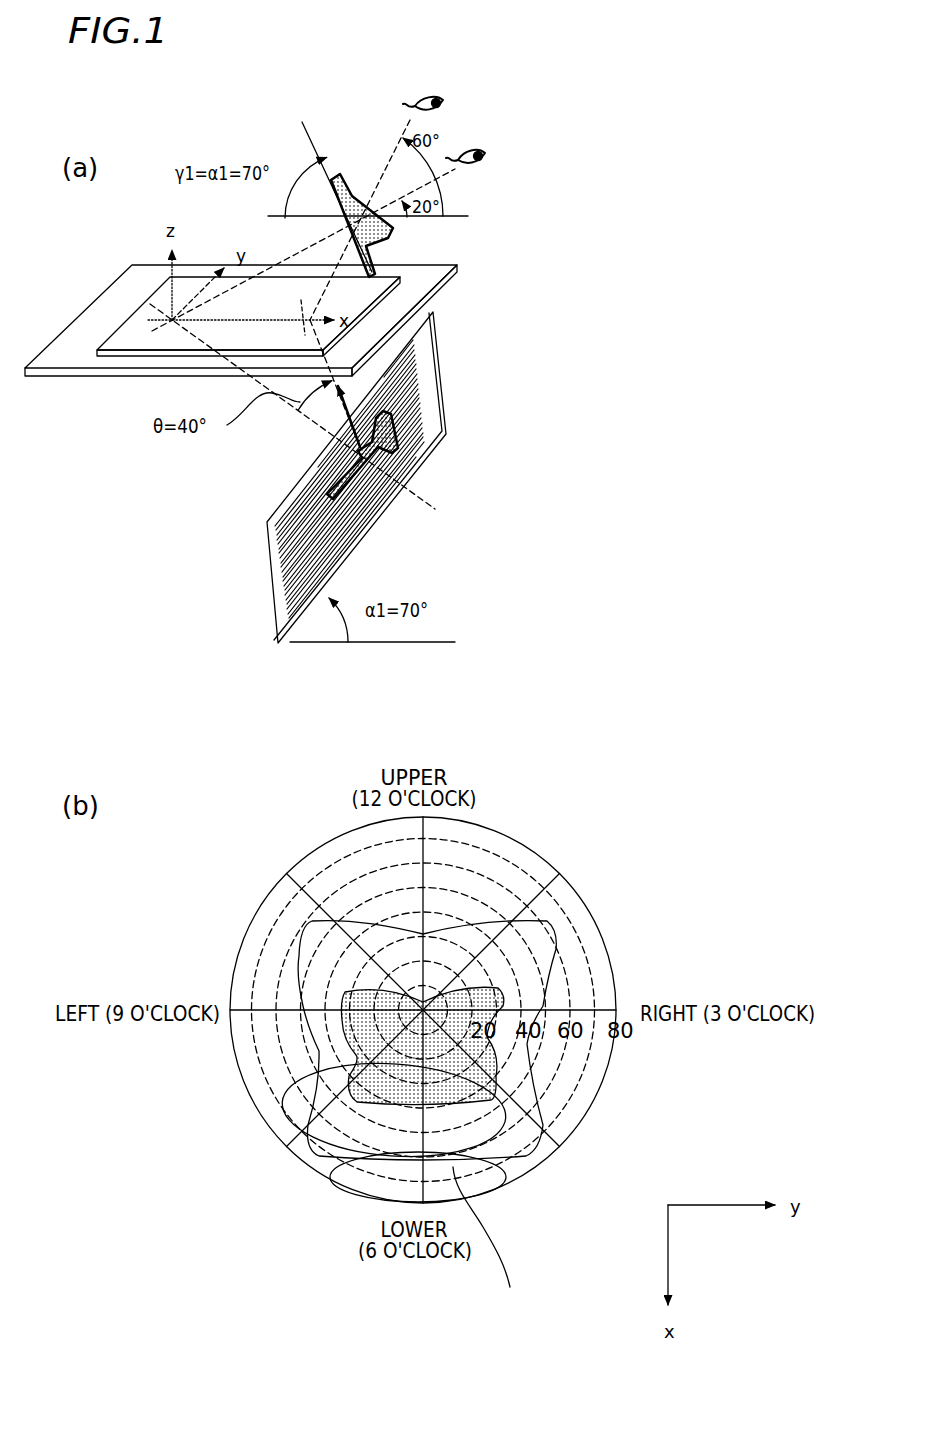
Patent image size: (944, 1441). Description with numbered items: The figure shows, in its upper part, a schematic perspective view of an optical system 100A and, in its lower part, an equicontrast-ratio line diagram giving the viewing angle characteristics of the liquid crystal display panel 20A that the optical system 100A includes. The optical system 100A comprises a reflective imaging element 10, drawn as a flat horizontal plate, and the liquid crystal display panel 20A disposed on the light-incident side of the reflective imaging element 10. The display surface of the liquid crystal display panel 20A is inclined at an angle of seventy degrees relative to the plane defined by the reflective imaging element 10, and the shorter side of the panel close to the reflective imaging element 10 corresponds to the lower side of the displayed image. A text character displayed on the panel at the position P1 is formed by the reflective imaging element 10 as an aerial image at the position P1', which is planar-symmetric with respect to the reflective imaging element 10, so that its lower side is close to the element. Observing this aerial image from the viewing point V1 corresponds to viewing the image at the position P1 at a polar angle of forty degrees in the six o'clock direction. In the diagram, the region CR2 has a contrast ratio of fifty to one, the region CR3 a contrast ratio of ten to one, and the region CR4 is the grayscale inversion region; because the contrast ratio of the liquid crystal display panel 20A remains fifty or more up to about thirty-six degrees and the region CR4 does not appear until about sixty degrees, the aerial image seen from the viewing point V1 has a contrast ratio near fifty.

The optical system 100A is at (325, 363).
The reflective imaging element 10 is at (478, 297).
The liquid crystal display panel 20A is at (467, 432).
The position of the displayed image P1 is at (427, 464).
The aerial image position P1' is at (362, 192).
The viewing point V1 is at (426, 90).
The region with a contrast ratio of 50:1 CR2 is at (283, 1104).
The region with a contrast ratio of 10:1 CR3 is at (402, 1125).
The grayscale inversion region CR4 is at (502, 1249).